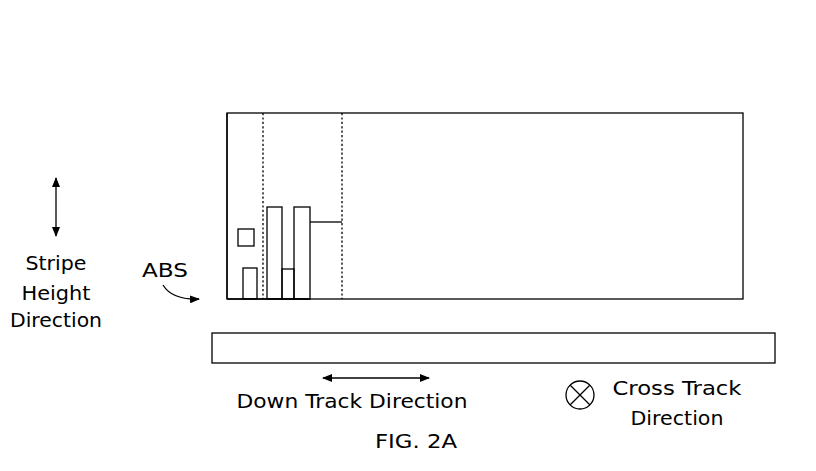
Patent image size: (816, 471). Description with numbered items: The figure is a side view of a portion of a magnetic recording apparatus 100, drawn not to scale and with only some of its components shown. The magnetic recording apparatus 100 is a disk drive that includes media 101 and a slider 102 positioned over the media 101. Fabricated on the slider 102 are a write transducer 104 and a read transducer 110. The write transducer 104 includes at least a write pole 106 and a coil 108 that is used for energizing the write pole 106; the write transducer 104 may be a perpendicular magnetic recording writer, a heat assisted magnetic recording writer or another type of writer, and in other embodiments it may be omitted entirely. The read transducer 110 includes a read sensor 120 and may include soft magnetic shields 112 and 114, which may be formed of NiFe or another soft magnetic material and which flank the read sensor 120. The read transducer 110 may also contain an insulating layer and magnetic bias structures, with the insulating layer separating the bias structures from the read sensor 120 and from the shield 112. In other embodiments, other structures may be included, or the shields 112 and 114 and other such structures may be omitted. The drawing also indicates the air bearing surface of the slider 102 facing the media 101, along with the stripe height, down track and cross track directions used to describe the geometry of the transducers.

The magnetic recording apparatus 100 is at (396, 30).
The media 101 is at (212, 353).
The slider 102 is at (743, 175).
The write transducer 104 is at (227, 160).
The write pole 106 is at (243, 268).
The coil 108 is at (238, 230).
The read transducer 110 is at (342, 145).
The soft magnetic shield 112 is at (342, 222).
The soft magnetic shield 114 is at (274, 207).
The read sensor 120 is at (290, 299).